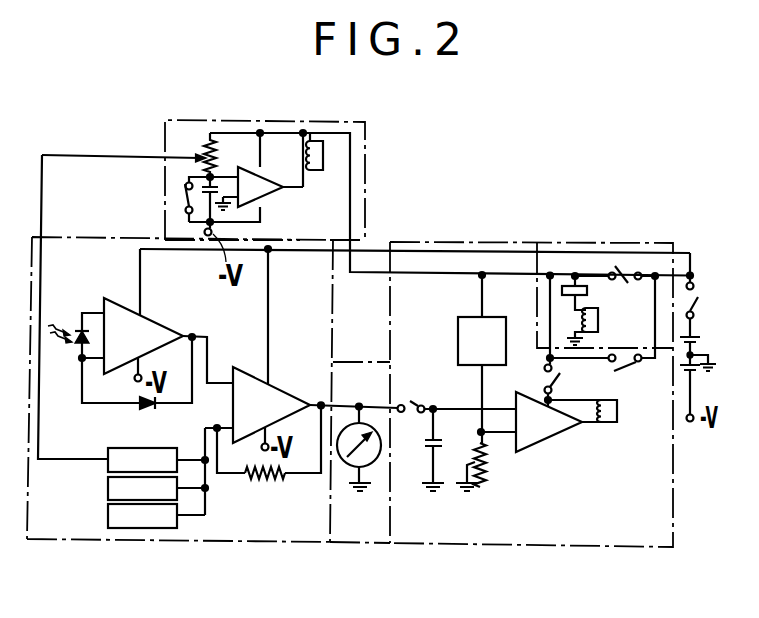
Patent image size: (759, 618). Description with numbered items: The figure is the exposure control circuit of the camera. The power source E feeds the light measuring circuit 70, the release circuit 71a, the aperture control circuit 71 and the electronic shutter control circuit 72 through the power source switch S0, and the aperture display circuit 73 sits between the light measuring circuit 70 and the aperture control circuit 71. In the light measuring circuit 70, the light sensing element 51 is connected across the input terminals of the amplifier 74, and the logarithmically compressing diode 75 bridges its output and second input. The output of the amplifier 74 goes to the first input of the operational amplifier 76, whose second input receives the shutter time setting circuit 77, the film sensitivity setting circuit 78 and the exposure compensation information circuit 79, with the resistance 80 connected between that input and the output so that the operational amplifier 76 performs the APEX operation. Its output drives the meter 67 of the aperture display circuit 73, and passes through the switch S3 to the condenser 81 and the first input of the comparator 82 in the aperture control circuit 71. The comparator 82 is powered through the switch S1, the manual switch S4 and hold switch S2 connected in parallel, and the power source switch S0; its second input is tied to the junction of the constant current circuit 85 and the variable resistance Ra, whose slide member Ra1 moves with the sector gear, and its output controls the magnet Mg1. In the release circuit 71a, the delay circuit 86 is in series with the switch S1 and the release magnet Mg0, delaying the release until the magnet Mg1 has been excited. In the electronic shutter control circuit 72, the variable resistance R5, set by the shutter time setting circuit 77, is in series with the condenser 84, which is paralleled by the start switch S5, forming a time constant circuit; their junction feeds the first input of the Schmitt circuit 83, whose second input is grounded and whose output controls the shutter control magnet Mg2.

The light sensing element 51 is at (78, 330).
The meter 67 is at (373, 470).
The light measuring circuit 70 is at (137, 532).
The aperture control circuit 71 is at (552, 547).
The release circuit 71a is at (596, 250).
The electronic shutter control circuit 72 is at (357, 187).
The aperture display circuit 73 is at (360, 543).
The amplifier 74 is at (143, 336).
The logarithmically compressing diode 75 is at (139, 409).
The operational amplifier 76 is at (271, 405).
The shutter time setting circuit 77 is at (157, 448).
The film sensitivity setting circuit 78 is at (108, 485).
The exposure compensation information circuit 79 is at (108, 515).
The resistance 80 is at (263, 480).
The condenser 81 is at (425, 445).
The comparator 82 is at (549, 422).
The Schmitt circuit 83 is at (263, 196).
The condenser 84 is at (202, 185).
The constant current circuit 85 is at (482, 341).
The delay circuit 86 is at (562, 291).
The variable resistance R5 is at (207, 142).
The power source switch S0 is at (698, 297).
The switch S1 is at (628, 289).
The hold switch S2 is at (628, 366).
The switch S3 is at (412, 400).
The manual switch S4 is at (560, 373).
The start switch S5 is at (186, 197).
The release magnet Mg0 is at (598, 331).
The magnet Mg1 is at (608, 426).
The shutter control magnet Mg2 is at (318, 170).
The variable resistance Ra is at (485, 467).
The slide member Ra1 is at (468, 463).
The power source E is at (700, 337).